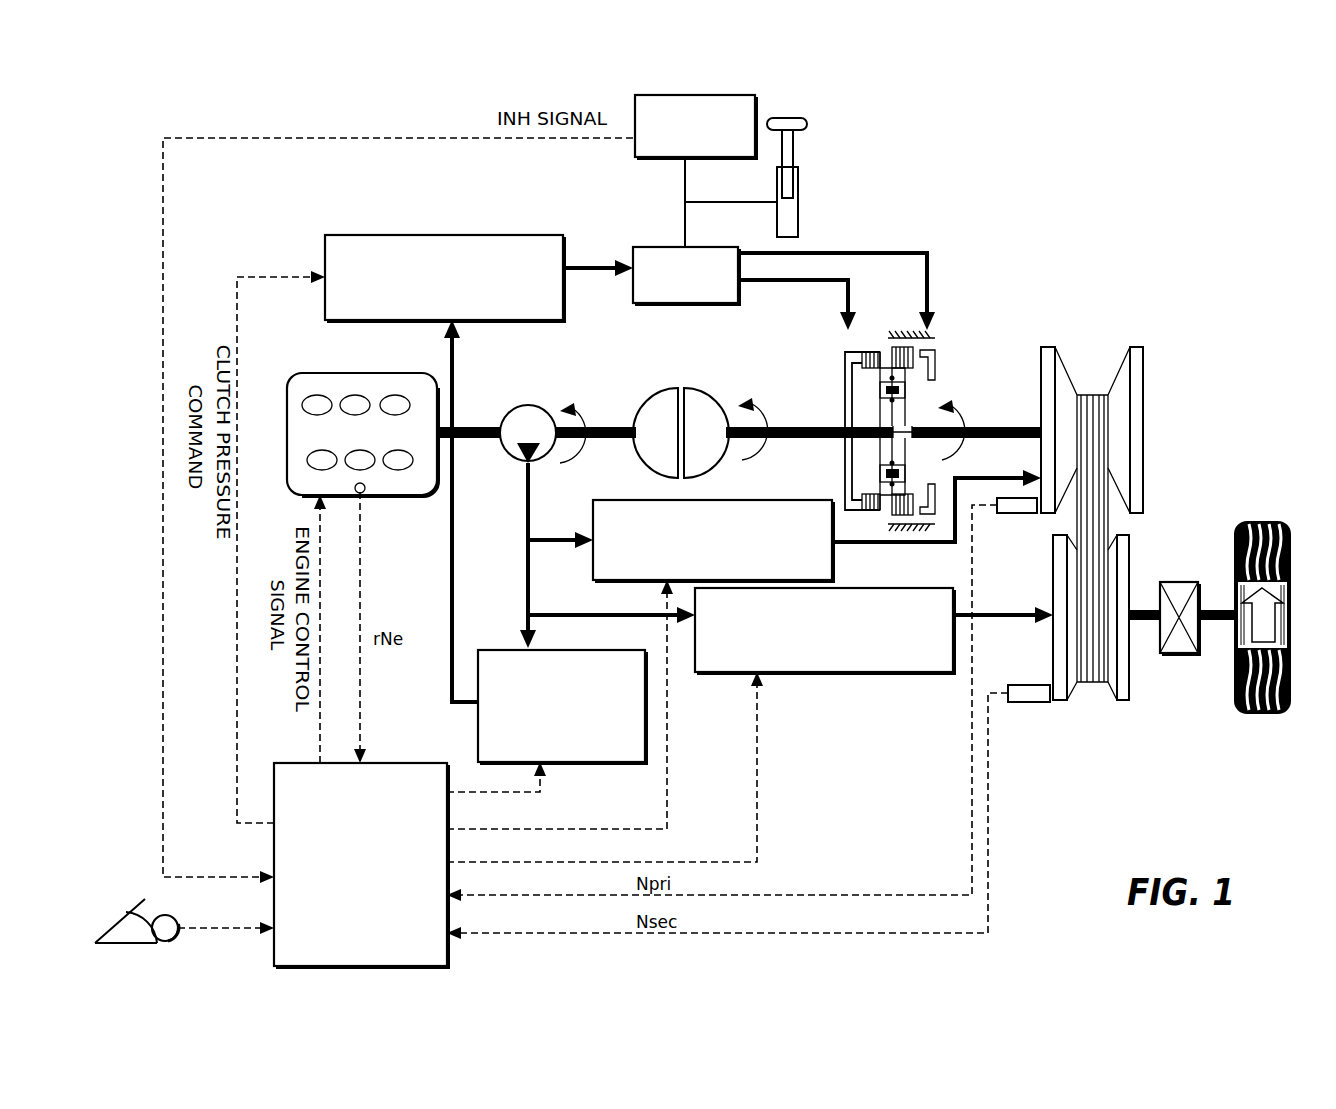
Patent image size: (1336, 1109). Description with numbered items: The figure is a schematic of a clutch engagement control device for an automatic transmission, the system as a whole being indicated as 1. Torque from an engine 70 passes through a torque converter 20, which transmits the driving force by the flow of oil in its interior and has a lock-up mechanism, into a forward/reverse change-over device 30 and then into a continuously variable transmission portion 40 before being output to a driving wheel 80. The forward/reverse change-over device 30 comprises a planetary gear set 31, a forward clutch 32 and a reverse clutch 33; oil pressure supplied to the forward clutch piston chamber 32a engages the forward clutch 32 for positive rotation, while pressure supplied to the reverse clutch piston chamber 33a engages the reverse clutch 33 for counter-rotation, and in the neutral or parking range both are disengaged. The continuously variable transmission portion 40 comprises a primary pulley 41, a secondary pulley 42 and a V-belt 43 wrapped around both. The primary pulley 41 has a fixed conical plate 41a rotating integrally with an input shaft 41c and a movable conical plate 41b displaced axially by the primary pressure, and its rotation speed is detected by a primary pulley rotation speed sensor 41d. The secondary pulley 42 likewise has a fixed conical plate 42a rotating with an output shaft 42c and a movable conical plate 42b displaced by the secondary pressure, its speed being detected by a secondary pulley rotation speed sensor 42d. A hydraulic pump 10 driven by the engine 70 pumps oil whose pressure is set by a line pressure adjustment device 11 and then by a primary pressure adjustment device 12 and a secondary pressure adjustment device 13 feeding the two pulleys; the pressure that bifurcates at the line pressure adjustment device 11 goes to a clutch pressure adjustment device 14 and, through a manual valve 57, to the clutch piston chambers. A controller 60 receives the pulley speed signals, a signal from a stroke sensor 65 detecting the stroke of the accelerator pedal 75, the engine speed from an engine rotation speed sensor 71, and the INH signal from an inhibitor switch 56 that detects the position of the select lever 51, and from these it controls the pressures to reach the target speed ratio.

The vehicle power train / transmission system 1 is at (1172, 252).
The hydraulic pump 10 is at (527, 408).
The line pressure adjustment device 11 is at (512, 655).
The primary pressure adjustment device 12 is at (810, 500).
The secondary pressure adjustment device 13 is at (850, 673).
The clutch pressure adjustment device 14 is at (435, 236).
The torque converter 20 is at (698, 383).
The forward/reverse change-over device 30 is at (955, 332).
The planetary gear set 31 is at (892, 350).
The forward clutch 32 is at (862, 353).
The forward clutch piston chamber 32a is at (845, 353).
The reverse clutch 33 is at (926, 431).
The reverse clutch piston chamber 33a is at (937, 358).
The continuously variable transmission portion 40 is at (1087, 258).
The primary pulley 41 is at (1055, 424).
The fixed conical plate 41a is at (1136, 345).
The movable conical plate 41b is at (1046, 345).
The input shaft 41c is at (1010, 426).
The primary pulley rotation speed sensor 41d is at (1010, 514).
The secondary pulley 42 is at (1117, 657).
The fixed conical plate 42a is at (1066, 705).
The movable conical plate 42b is at (1128, 705).
The output shaft 42c is at (1143, 612).
The secondary pulley rotation speed sensor 42d is at (1018, 704).
The V-belt 43 is at (1105, 528).
The select lever 51 is at (812, 129).
The inhibitor switch 56 is at (633, 149).
The manual valve 57 is at (645, 252).
The controller 60 is at (361, 853).
The stroke sensor 65 is at (165, 913).
The engine 70 is at (338, 366).
The engine rotation speed sensor 71 is at (363, 494).
The accelerator pedal 75 is at (138, 907).
The driving wheel 80 is at (1288, 545).